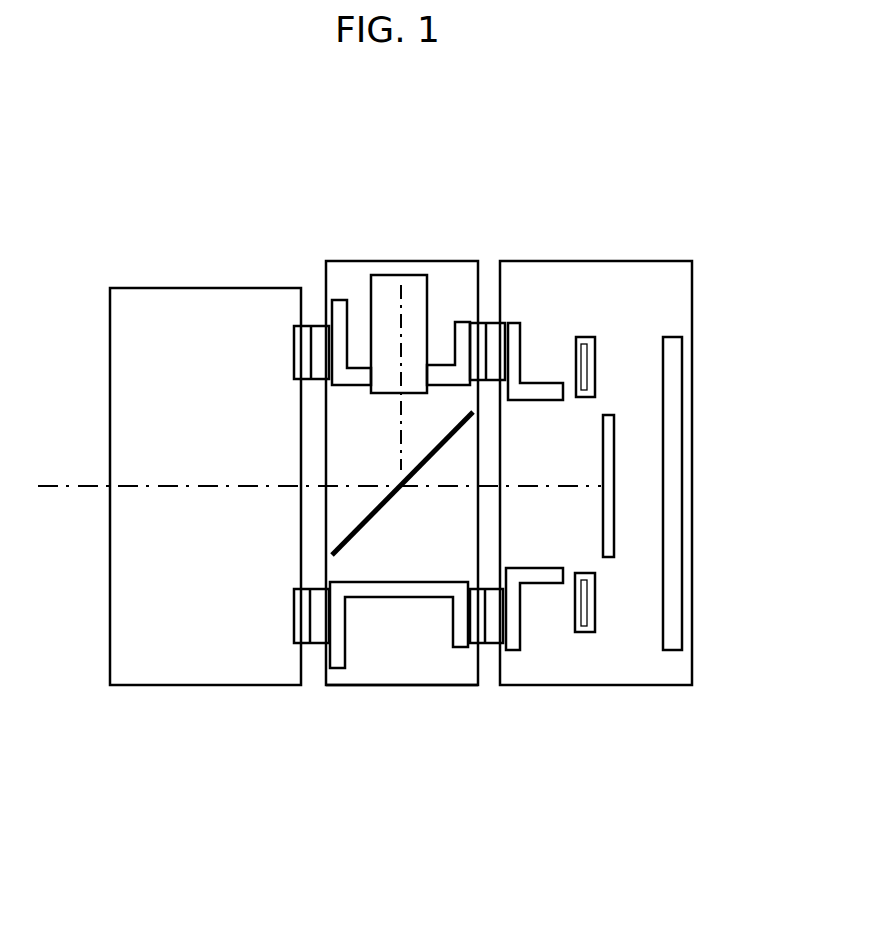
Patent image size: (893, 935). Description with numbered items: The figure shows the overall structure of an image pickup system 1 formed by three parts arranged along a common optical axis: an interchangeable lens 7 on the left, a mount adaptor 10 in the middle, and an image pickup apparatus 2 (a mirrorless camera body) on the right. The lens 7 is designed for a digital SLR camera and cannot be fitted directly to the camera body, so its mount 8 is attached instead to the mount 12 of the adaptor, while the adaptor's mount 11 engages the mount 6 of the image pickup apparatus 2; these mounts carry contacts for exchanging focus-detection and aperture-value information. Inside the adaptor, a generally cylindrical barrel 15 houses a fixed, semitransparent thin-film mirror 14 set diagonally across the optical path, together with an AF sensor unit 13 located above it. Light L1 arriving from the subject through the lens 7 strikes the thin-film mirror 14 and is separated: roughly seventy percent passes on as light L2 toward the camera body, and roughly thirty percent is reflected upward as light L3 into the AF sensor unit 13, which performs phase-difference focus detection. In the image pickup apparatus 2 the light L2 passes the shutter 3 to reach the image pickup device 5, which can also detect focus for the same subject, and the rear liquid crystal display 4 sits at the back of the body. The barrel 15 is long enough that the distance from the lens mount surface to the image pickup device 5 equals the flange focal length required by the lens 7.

The image pickup system 1 is at (620, 108).
The image pickup apparatus 2 is at (670, 260).
The shutter 3 is at (597, 365).
The rear liquid crystal display 4 is at (683, 412).
The image pickup device 5 is at (615, 515).
The mount 6 is at (495, 340).
The lens 7 is at (110, 287).
The mount 8 is at (300, 338).
The mount adaptor 10 is at (340, 262).
The mount 11 is at (482, 332).
The mount 12 is at (320, 337).
The AF sensor unit 13 is at (383, 285).
The thin-film mirror 14 is at (357, 525).
The barrel 15 is at (467, 687).
The light L1 is at (92, 485).
The light L2 is at (535, 485).
The light L3 is at (401, 423).